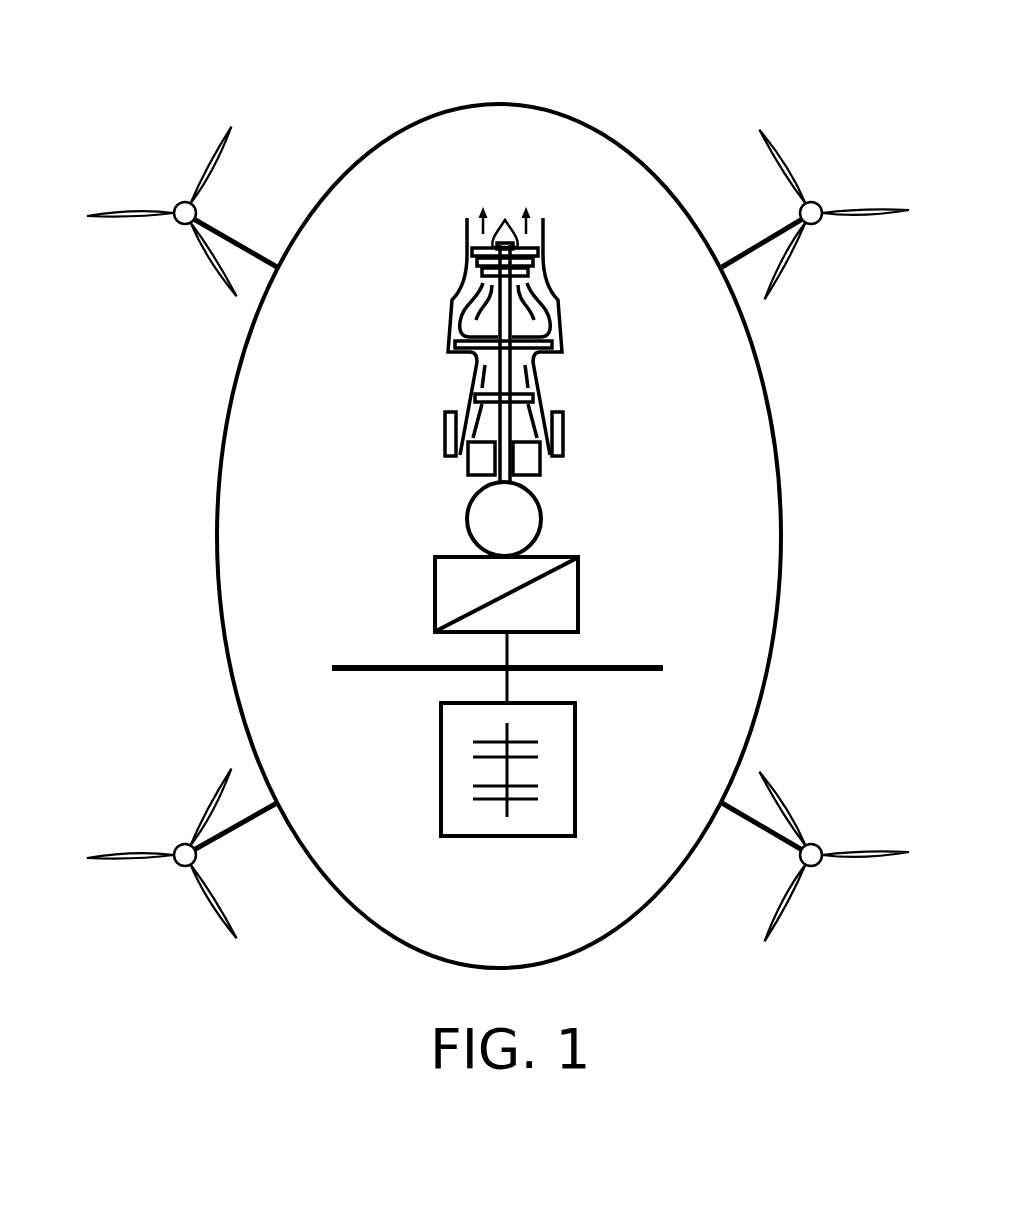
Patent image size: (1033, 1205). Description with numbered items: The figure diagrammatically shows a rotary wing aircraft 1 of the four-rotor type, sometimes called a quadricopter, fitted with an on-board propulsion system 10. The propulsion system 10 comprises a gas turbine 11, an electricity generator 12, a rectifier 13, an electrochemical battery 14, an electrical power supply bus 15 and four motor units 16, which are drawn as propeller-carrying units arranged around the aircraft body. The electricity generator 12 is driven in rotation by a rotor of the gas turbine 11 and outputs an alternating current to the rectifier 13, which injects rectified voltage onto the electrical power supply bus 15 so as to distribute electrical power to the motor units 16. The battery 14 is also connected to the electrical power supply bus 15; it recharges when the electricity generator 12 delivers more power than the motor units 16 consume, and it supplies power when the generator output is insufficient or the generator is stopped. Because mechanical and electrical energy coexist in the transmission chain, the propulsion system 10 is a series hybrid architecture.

The aircraft 1 is at (646, 57).
The propulsion system 10 is at (645, 461).
The gas turbine 11 is at (555, 283).
The electricity generator 12 is at (543, 509).
The rectifier 13 is at (578, 600).
The electrochemical battery 14 is at (575, 790).
The electrical power supply bus 15 is at (381, 671).
The motor units 16 is at (127, 130).